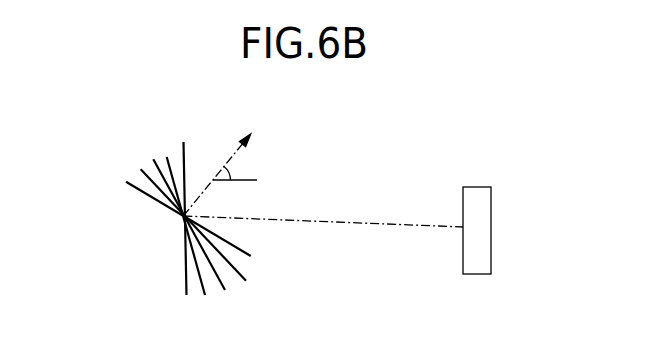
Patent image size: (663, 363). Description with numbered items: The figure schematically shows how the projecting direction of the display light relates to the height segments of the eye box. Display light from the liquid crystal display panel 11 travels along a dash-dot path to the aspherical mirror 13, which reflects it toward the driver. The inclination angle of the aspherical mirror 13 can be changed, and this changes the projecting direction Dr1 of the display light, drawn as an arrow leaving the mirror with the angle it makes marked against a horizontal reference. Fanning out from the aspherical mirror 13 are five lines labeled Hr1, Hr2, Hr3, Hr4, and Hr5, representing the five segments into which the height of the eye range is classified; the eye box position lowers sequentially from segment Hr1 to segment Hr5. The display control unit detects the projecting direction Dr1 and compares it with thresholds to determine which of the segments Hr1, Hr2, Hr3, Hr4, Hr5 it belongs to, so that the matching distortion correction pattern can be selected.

The liquid crystal display panel 11 is at (472, 187).
The aspherical mirror 13 is at (159, 191).
The segment Hr1 is at (184, 150).
The segment Hr2 is at (168, 156).
The segment Hr3 is at (154, 160).
The segment Hr4 is at (141, 170).
The segment Hr5 is at (127, 186).
The projecting direction Dr1 is at (232, 174).